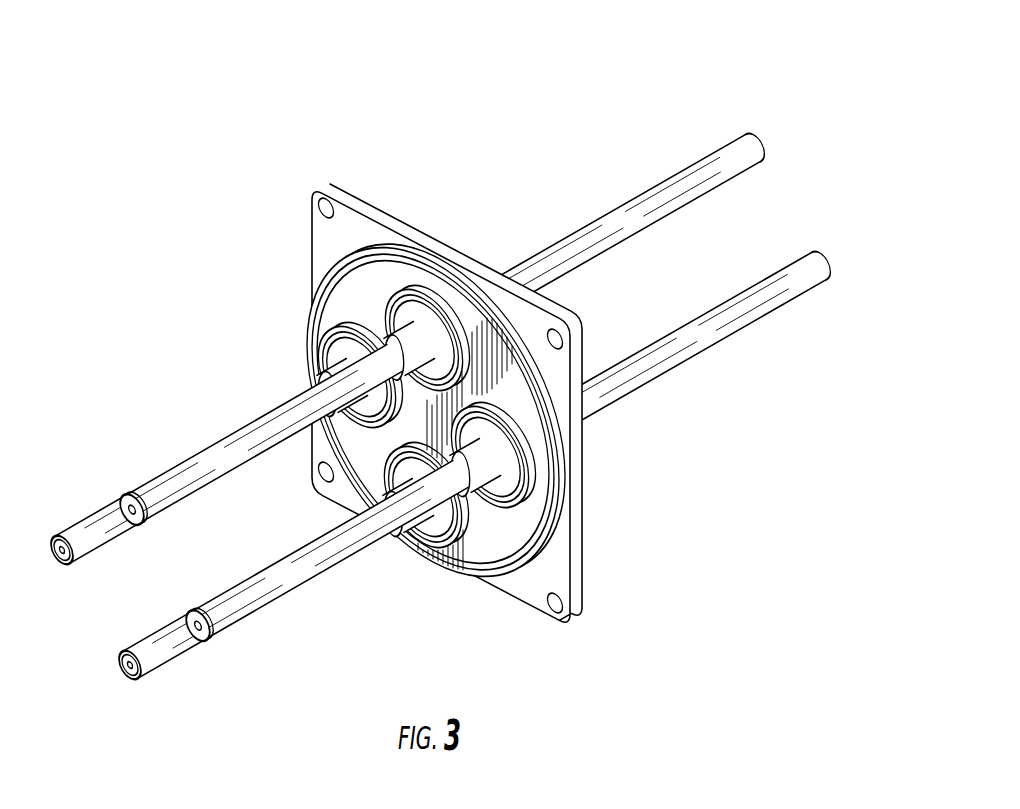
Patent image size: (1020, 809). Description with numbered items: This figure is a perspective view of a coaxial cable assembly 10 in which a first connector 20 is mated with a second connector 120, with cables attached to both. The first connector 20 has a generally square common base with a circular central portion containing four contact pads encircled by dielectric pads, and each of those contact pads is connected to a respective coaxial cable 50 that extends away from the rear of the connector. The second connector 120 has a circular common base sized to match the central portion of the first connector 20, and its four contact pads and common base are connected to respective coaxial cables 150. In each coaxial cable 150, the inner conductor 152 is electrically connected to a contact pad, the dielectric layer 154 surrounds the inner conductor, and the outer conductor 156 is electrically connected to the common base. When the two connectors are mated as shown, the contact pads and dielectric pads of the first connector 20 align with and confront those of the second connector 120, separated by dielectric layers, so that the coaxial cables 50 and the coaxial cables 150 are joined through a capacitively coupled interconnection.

The coaxial cable assembly 10 is at (440, 370).
The first connector 20 is at (489, 268).
The coaxial cable 50 is at (617, 220).
The second connector 120 is at (447, 583).
The coaxial cable 150 is at (165, 485).
The inner conductor 152 is at (196, 644).
The dielectric layer 154 is at (200, 651).
The outer conductor 156 is at (212, 641).